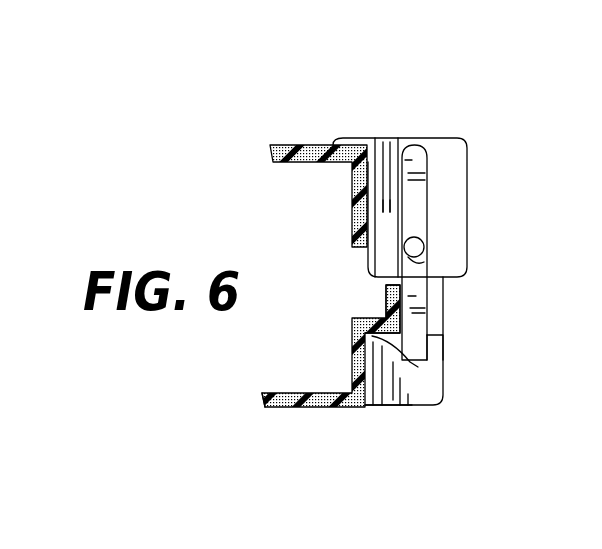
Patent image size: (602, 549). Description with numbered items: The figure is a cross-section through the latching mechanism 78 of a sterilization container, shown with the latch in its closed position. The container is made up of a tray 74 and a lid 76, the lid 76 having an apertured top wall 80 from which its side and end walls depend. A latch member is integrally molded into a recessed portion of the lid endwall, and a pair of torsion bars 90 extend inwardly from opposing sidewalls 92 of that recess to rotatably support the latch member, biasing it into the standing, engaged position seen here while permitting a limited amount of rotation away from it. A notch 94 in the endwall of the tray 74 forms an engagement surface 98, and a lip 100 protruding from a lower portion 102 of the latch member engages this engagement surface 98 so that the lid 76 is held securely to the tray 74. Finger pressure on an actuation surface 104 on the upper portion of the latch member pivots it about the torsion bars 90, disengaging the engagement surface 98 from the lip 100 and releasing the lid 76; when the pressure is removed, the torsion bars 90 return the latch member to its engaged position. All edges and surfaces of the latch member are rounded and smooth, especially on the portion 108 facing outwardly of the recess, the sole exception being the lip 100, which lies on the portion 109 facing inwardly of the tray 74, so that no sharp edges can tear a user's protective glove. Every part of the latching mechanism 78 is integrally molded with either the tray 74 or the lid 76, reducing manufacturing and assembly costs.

The tray 74 is at (262, 404).
The lid 76 is at (470, 128).
The latching mechanism 78 is at (461, 310).
The apertured top wall 80 is at (290, 145).
The torsion bars 90 is at (424, 261).
The sidewalls 92 is at (387, 145).
The notch 94 is at (412, 404).
The engagement surface 98 is at (378, 406).
The lip 100 is at (372, 320).
The lower portion 102 is at (413, 364).
The actuation surface 104 is at (431, 175).
The outwardly facing portion 108 is at (431, 337).
The inwardly facing portion 109 is at (384, 216).